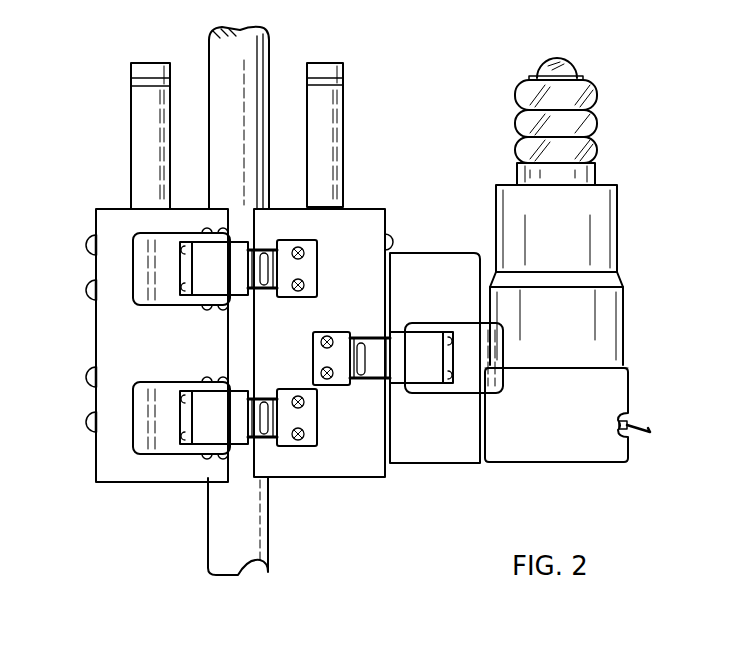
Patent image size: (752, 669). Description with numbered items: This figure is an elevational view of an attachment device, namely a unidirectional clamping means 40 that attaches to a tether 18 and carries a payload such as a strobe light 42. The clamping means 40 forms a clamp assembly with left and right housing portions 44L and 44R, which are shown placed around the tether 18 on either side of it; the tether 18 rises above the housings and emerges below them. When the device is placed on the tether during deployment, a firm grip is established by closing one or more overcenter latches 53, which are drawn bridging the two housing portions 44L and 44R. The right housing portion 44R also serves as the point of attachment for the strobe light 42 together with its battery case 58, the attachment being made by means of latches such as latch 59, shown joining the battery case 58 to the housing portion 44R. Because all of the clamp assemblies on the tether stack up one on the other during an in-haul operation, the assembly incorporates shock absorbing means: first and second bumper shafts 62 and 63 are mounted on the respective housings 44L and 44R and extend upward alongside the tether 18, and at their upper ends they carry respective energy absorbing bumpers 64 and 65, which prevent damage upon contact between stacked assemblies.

The tether 18 is at (268, 48).
The unidirectional clamping means 40 is at (65, 309).
The strobe light 42 is at (618, 249).
The left housing portion 44L is at (108, 352).
The right housing portion 44R is at (373, 218).
The overcenter latch 53 is at (177, 384).
The battery case 58 is at (440, 262).
The latch 59 is at (457, 327).
The first bumper shaft 62 is at (126, 133).
The second bumper shaft 63 is at (352, 122).
The energy absorbing bumper 64 is at (145, 72).
The energy absorbing bumper 65 is at (326, 72).